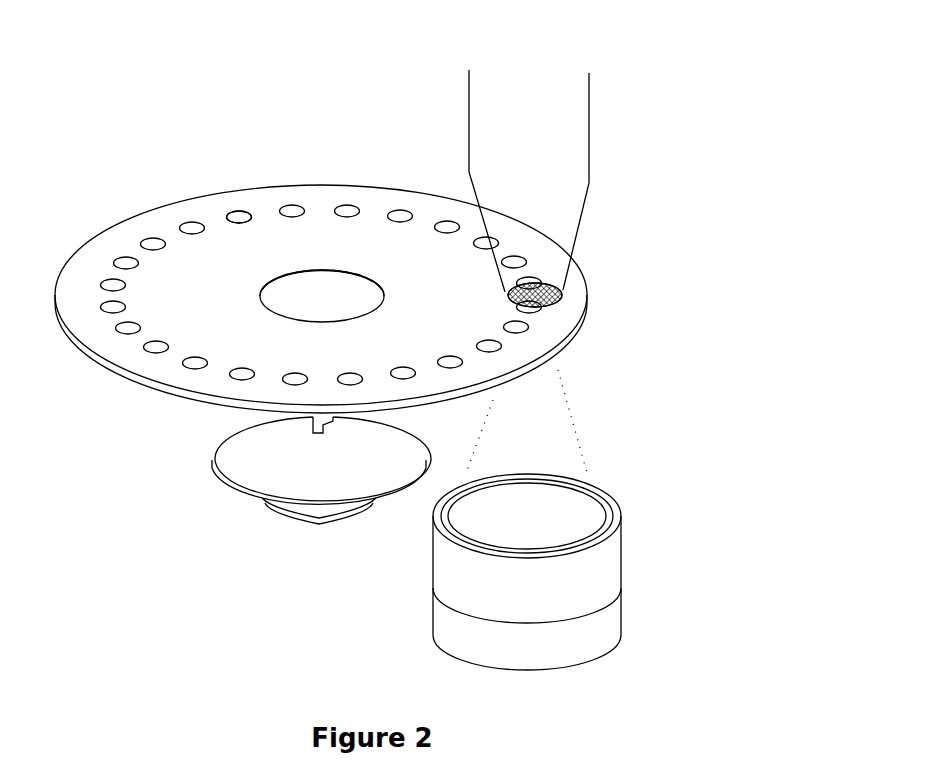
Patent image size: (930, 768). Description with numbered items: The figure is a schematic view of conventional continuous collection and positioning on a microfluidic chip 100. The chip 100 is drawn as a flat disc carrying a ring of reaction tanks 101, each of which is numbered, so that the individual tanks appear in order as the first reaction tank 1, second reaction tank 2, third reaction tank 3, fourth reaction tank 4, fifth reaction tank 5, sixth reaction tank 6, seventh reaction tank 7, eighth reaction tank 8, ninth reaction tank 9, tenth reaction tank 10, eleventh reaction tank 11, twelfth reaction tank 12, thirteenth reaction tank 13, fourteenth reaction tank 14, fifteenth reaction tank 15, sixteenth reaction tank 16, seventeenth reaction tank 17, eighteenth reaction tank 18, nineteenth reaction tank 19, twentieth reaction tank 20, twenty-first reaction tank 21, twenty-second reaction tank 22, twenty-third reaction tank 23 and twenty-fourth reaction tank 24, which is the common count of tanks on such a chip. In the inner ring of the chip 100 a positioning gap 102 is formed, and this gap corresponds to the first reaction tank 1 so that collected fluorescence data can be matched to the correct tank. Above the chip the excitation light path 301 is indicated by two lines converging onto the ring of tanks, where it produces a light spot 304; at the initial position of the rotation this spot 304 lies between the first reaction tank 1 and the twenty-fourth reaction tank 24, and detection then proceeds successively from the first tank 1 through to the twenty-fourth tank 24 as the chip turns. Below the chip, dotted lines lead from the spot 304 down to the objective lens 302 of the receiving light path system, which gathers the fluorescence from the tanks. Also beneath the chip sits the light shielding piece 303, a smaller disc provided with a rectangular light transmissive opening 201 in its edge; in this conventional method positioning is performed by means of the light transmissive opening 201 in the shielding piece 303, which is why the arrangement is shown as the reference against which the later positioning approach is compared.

The microfluidic chip 100 is at (316, 185).
The reaction tank 101 is at (244, 212).
The positioning gap 102 is at (386, 298).
The light transmissive opening 201 is at (326, 427).
The excitation light path 301 is at (527, 100).
The objective lens of a receiving light path system 302 is at (600, 578).
The light shielding piece 303 is at (322, 490).
The light spot 304 is at (562, 293).
The first reaction tank 1 is at (515, 305).
The second reaction tank 2 is at (511, 283).
The third reaction tank 3 is at (500, 263).
The fourth reaction tank 4 is at (480, 246).
The fifth reaction tank 5 is at (447, 236).
The sixth reaction tank 6 is at (400, 227).
The seventh reaction tank 7 is at (347, 222).
The eighth reaction tank 8 is at (292, 221).
The ninth reaction tank 9 is at (239, 227).
The tenth reaction tank 10 is at (193, 237).
The eleventh reaction tank 11 is at (160, 251).
The twelfth reaction tank 12 is at (135, 268).
The thirteenth reaction tank 13 is at (122, 288).
The fourteenth reaction tank 14 is at (121, 308).
The fifteenth reaction tank 15 is at (138, 327).
The sixteenth reaction tank 16 is at (165, 343).
The seventeenth reaction tank 17 is at (199, 356).
The eighteenth reaction tank 18 is at (241, 365).
The nineteenth reaction tank 19 is at (294, 370).
The twentieth reaction tank 20 is at (350, 370).
The twenty-first reaction tank 21 is at (403, 364).
The twenty-second reaction tank 22 is at (444, 353).
The twenty-third reaction tank 23 is at (479, 338).
The twenty-fourth reaction tank 24 is at (504, 325).